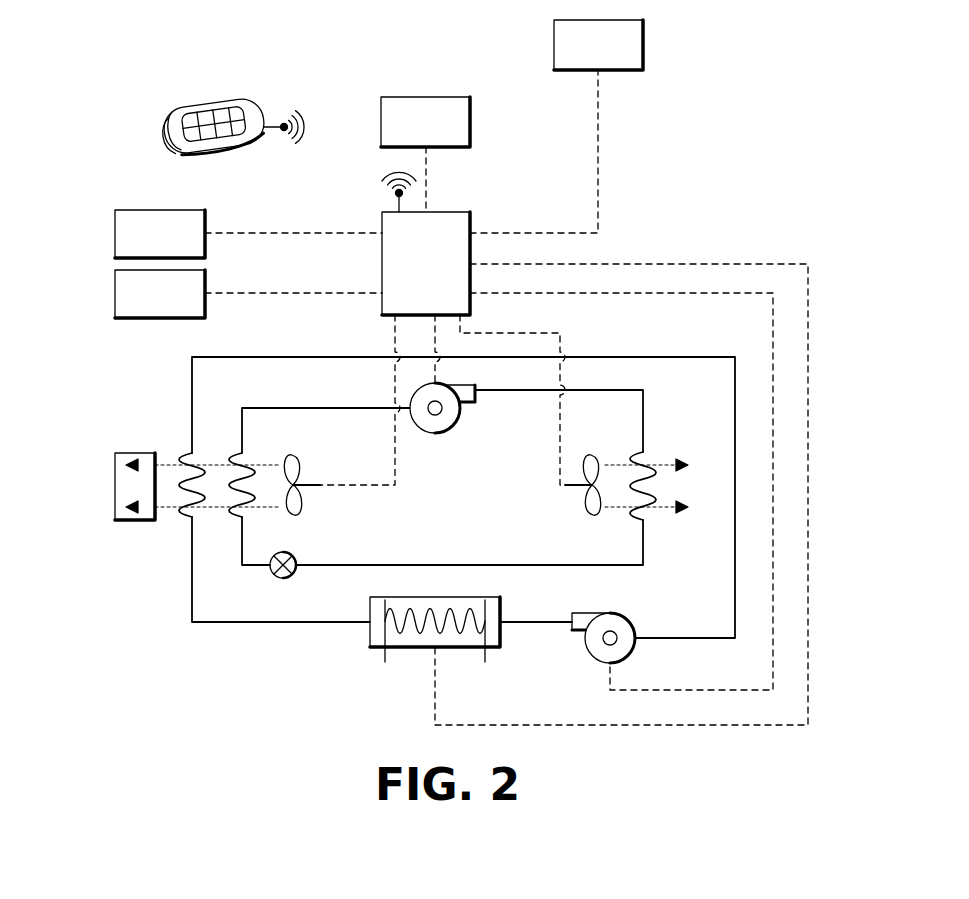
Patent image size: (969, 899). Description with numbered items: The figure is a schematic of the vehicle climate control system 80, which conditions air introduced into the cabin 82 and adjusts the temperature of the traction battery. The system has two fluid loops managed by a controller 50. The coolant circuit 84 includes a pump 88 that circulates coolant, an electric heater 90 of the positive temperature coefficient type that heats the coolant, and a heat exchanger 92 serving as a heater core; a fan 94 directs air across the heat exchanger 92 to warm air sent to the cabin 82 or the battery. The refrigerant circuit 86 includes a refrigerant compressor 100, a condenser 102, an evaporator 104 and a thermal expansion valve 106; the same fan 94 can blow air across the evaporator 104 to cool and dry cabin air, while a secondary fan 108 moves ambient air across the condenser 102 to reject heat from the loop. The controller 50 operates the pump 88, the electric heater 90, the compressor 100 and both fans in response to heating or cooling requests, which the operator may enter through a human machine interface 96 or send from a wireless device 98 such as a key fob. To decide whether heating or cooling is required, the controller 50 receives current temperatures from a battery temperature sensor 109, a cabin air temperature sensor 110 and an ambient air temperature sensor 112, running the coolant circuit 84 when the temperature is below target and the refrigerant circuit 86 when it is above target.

The controller 50 is at (450, 212).
The climate control system 80 is at (720, 74).
The cabin 82 is at (138, 452).
The coolant circuit 84 is at (293, 622).
The refrigerant circuit 86 is at (645, 543).
The pump 88 is at (612, 613).
The electric heater 90 is at (370, 633).
The heat exchanger 92 is at (183, 518).
The fan 94 is at (303, 490).
The human machine interface 96 is at (470, 122).
The wireless device 98 is at (216, 100).
The refrigerant compressor 100 is at (436, 433).
The condenser 102 is at (656, 490).
The evaporator 104 is at (234, 518).
The thermal expansion valve 106 is at (283, 579).
The secondary fan 108 is at (574, 490).
The battery temperature sensor 109 is at (643, 45).
The cabin air temperature sensor 110 is at (115, 233).
The ambient air temperature sensor 112 is at (115, 293).